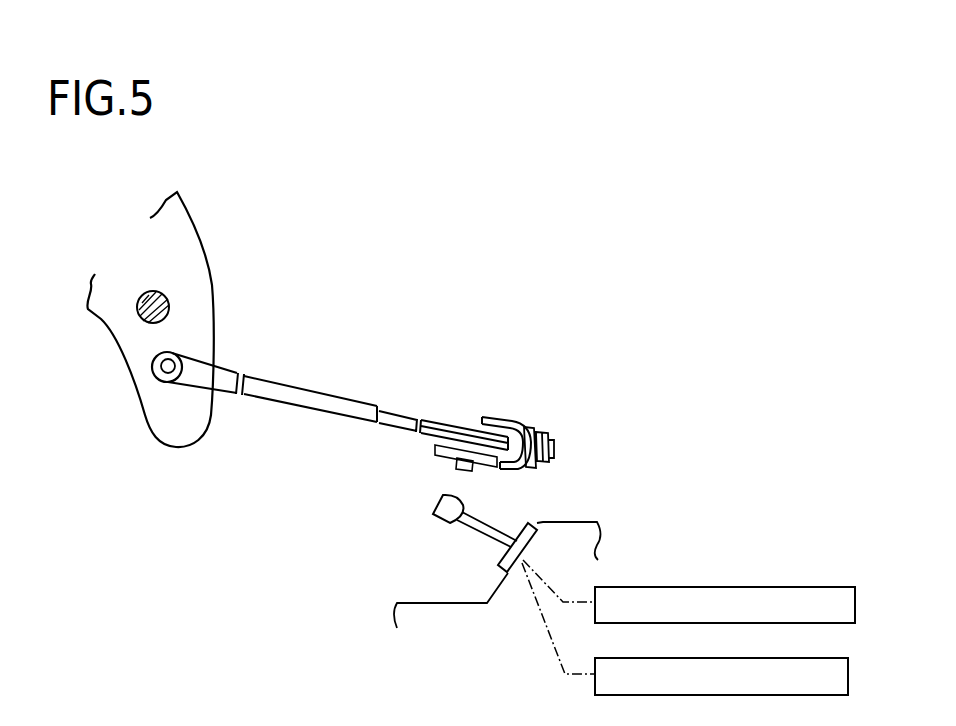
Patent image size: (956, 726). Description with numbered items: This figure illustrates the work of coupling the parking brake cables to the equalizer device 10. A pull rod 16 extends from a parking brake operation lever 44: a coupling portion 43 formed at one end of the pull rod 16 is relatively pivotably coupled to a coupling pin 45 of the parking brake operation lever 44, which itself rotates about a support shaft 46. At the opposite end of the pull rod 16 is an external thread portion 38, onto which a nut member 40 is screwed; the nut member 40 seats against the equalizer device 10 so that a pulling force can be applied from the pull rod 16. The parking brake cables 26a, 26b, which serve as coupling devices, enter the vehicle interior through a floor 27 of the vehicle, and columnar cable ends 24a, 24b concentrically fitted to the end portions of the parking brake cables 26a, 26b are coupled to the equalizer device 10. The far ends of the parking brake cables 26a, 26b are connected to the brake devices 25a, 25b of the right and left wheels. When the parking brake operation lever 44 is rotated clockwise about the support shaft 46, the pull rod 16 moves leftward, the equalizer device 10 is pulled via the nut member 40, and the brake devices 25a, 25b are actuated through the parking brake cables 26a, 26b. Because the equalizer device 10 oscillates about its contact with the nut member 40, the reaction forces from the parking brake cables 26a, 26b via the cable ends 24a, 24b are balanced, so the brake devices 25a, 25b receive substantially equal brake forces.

The equalizer device 10 is at (507, 419).
The pull rod 16 is at (280, 397).
The cable end 24a is at (406, 507).
The cable end 24b is at (435, 503).
The brake device 25a is at (700, 592).
The brake device 25b is at (700, 665).
The parking brake cable 26a is at (463, 549).
The parking brake cable 26b is at (482, 538).
The floor 27 is at (573, 520).
The external thread portion 38 is at (445, 432).
The nut member 40 is at (530, 409).
The coupling portion 43 is at (172, 366).
The parking brake operation lever 44 is at (178, 243).
The coupling pin 45 is at (165, 366).
The support shaft 46 is at (167, 298).